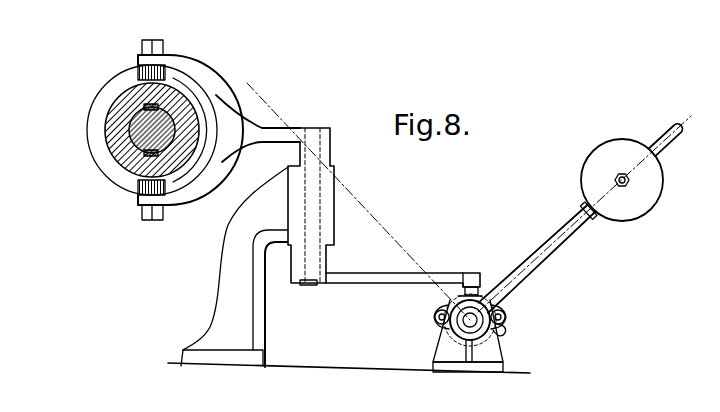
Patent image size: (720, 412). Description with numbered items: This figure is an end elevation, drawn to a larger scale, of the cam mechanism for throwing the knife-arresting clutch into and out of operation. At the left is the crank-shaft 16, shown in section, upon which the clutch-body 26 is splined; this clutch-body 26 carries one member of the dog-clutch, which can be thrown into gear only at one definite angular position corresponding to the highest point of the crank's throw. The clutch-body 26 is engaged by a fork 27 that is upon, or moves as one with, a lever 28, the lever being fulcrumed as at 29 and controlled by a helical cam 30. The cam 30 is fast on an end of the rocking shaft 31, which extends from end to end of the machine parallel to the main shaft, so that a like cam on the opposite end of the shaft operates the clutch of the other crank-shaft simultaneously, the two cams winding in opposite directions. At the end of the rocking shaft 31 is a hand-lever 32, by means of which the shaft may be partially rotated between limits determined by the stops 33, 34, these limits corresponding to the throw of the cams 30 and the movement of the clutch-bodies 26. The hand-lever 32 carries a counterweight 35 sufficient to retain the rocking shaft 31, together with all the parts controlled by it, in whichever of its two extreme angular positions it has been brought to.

The crank-shaft 16 is at (150, 130).
The clutch-body 26 is at (120, 108).
The fork 27 is at (212, 84).
The lever 28 is at (387, 283).
The fulcrum 29 is at (316, 226).
The helical cam 30 is at (506, 332).
The rocking shaft 31 is at (449, 328).
The hand-lever 32 is at (535, 255).
The stop 33 is at (435, 317).
The stop 34 is at (515, 313).
The counterweight 35 is at (622, 180).